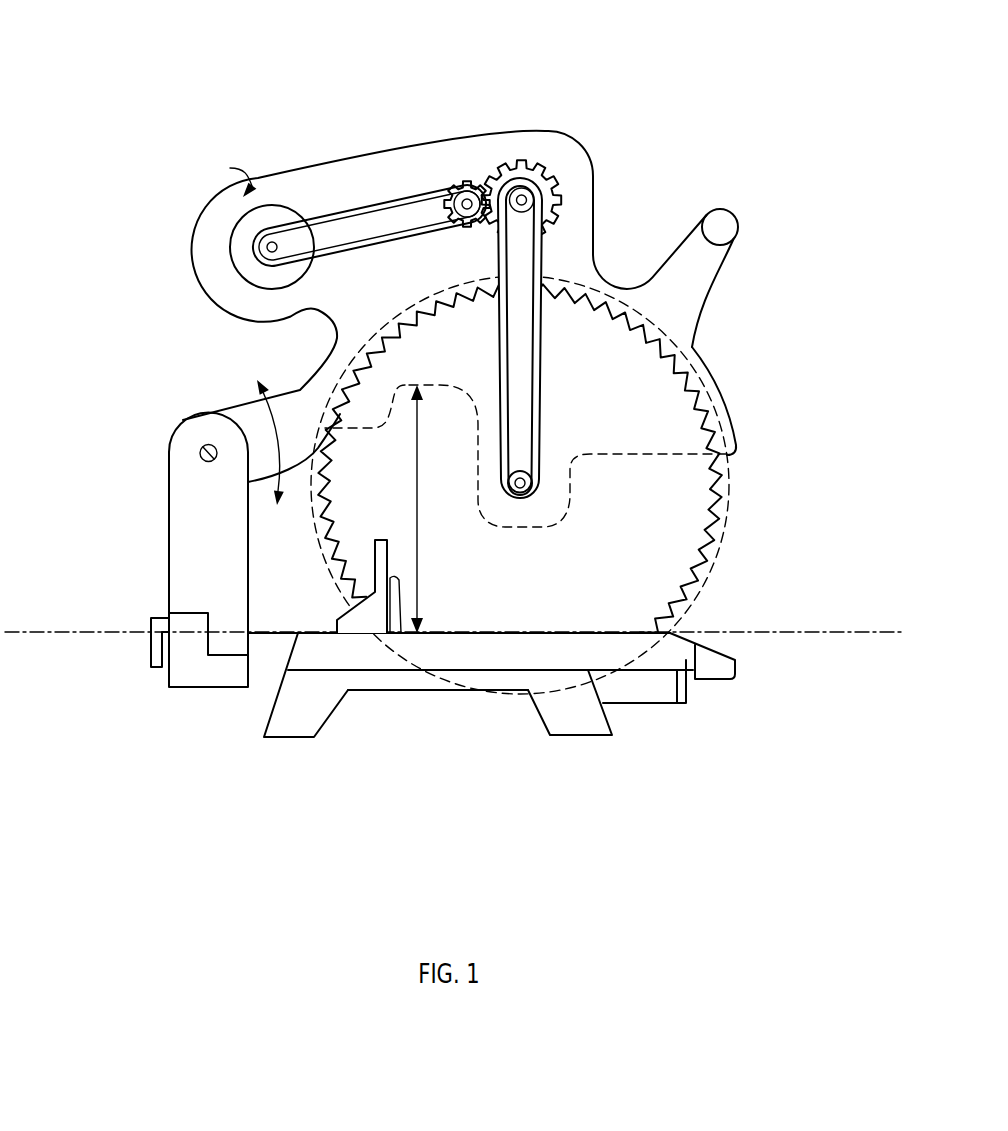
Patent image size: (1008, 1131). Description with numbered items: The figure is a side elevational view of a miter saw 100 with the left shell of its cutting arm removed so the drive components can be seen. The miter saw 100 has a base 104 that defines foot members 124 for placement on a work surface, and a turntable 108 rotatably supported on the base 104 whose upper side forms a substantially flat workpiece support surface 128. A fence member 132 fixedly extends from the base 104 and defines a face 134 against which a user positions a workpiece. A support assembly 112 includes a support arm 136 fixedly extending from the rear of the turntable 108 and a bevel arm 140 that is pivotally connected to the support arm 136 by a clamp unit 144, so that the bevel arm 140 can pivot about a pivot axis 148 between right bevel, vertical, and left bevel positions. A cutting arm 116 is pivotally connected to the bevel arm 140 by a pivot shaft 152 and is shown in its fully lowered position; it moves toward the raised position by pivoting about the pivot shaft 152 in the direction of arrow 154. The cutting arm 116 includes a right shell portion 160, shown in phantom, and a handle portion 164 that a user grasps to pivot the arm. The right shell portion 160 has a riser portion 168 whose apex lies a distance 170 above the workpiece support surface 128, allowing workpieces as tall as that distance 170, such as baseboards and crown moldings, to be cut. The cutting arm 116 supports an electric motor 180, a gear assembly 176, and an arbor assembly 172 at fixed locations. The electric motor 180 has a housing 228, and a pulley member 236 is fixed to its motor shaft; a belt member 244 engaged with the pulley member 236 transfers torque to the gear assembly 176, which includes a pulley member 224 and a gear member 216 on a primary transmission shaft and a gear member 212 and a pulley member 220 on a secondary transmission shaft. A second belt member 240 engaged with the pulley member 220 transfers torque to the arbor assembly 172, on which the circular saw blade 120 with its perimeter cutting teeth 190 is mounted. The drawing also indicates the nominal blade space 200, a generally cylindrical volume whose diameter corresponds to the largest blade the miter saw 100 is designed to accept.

The miter saw 100 is at (455, 406).
The base 104 is at (503, 692).
The turntable 108 is at (686, 690).
The support assembly 112 is at (145, 540).
The cutting arm 116 is at (445, 301).
The saw blade 120 is at (667, 545).
The foot members 124 is at (283, 738).
The workpiece support surface 128 is at (532, 633).
The fence member 132 is at (337, 626).
The face 134 is at (402, 625).
The support arm 136 is at (185, 675).
The bevel arm 140 is at (157, 540).
The clamp unit 144 is at (157, 655).
The pivot axis 148 is at (828, 633).
The pivot shaft 152 is at (172, 443).
The arrow 154 is at (273, 435).
The right shell portion 160 is at (377, 152).
The handle portion 164 is at (728, 228).
The riser portion 168 is at (457, 383).
The distance 170 is at (417, 505).
The arbor assembly 172 is at (518, 493).
The gear assembly 176 is at (389, 285).
The electric motor 180 is at (224, 175).
The cutting teeth 190 is at (690, 367).
The nominal blade space 200 is at (737, 485).
The gear member 212 is at (560, 172).
The gear member 216 is at (435, 218).
The pulley member 220 is at (521, 185).
The pulley member 224 is at (467, 190).
The housing 228 is at (243, 232).
The pulley member 236 is at (262, 244).
The belt member 240 is at (541, 390).
The belt member 244 is at (413, 193).